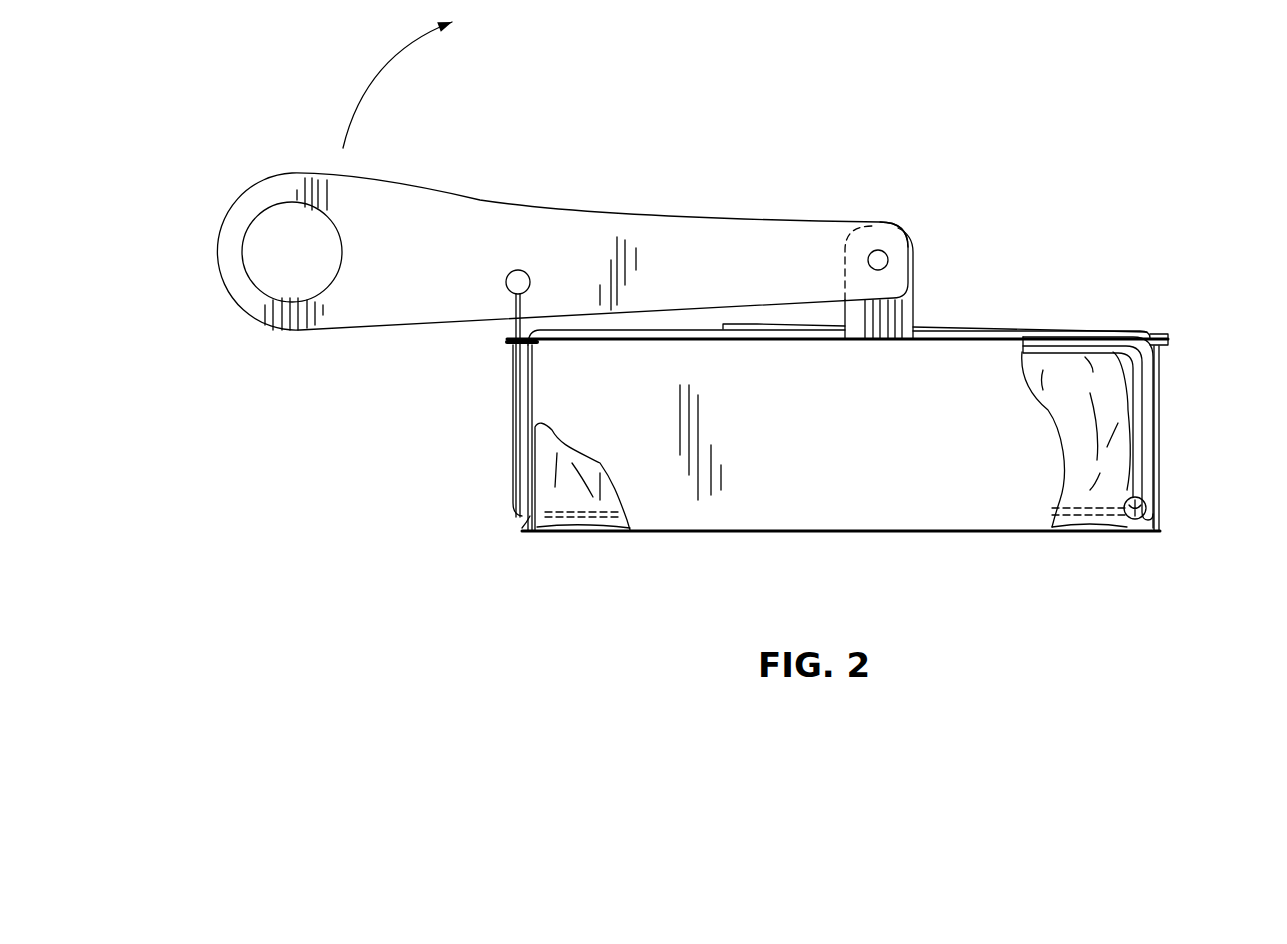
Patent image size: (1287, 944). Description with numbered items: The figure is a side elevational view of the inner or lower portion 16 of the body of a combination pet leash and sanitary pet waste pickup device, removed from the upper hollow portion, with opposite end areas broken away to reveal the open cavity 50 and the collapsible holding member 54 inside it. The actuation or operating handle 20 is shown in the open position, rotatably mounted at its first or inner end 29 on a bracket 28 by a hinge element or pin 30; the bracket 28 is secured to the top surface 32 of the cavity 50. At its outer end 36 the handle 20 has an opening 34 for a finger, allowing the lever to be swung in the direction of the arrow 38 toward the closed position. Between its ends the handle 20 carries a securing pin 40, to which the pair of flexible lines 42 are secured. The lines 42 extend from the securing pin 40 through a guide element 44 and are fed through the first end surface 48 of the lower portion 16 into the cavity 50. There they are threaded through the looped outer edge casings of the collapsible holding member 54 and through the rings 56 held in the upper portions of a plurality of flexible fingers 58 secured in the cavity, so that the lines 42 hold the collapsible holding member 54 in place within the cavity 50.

The inner or lower portion 16 is at (872, 540).
The actuation or operating handle 20 is at (700, 228).
The bracket 28 is at (915, 287).
The first or inner end 29 is at (898, 256).
The hinge element or pin 30 is at (877, 265).
The top surface 32 is at (1000, 348).
The opening 34 is at (296, 212).
The outer end 36 is at (253, 315).
The arrow 38 is at (380, 82).
The securing pin 40 is at (518, 270).
The pair of lines 42 is at (513, 413).
The guide element 44 is at (510, 348).
The first end surface 48 is at (525, 530).
The cavity 50 is at (540, 532).
The collapsible holding member 54 is at (1048, 397).
The rings 56 is at (1140, 520).
The flexible fingers 58 is at (1138, 395).